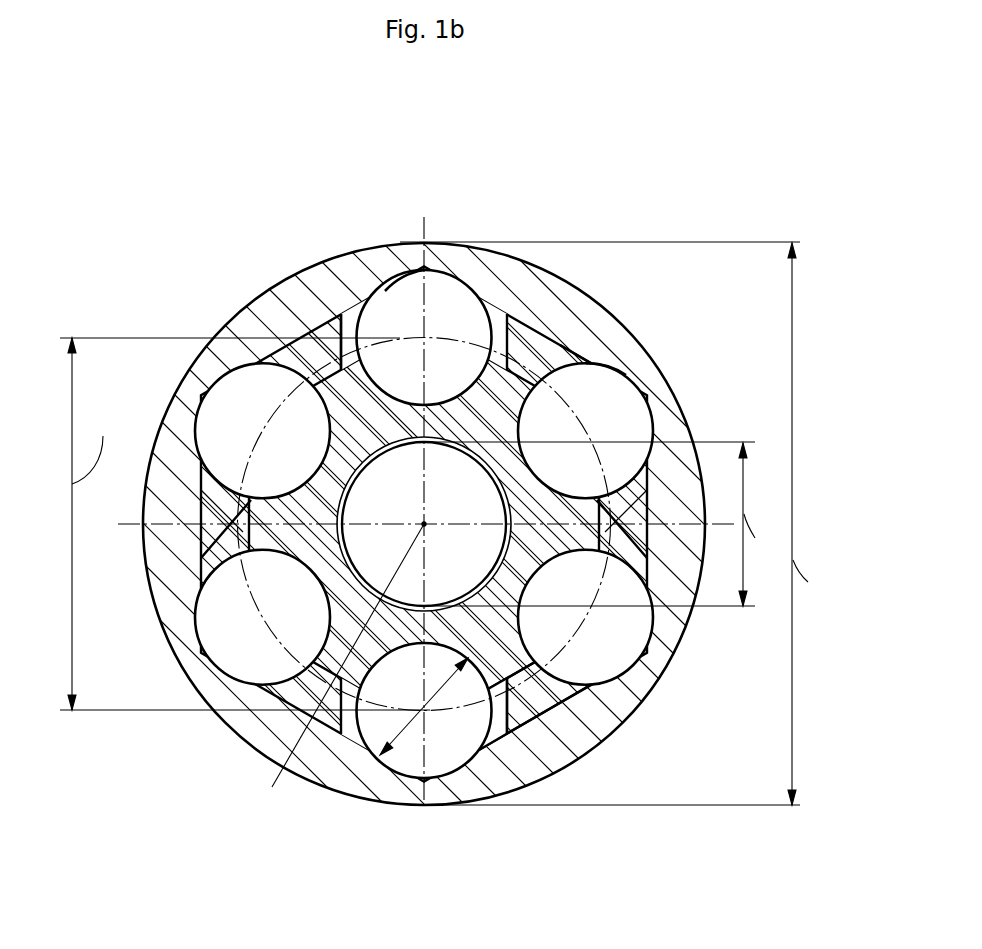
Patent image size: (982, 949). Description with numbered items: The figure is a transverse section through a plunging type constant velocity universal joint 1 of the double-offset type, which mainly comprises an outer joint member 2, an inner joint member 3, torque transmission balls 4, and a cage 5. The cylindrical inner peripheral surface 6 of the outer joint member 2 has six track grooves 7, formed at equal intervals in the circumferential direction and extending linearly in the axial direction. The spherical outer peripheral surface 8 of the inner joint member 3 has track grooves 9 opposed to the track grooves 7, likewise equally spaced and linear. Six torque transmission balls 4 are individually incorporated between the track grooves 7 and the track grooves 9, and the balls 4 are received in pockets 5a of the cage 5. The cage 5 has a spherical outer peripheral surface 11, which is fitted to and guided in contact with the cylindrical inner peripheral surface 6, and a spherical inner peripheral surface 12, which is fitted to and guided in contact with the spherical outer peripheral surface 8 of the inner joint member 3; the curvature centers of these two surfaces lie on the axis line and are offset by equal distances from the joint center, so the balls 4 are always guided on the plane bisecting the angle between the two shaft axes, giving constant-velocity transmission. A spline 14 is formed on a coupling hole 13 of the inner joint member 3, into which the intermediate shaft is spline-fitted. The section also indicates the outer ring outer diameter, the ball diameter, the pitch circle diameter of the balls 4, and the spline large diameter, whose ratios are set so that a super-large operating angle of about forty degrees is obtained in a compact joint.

The plunging type constant velocity universal joint 1 is at (460, 457).
The outer joint member 2 is at (398, 242).
The inner joint member 3 is at (507, 653).
The torque transmission balls 4 is at (615, 423).
The cage 5 is at (552, 290).
The pockets 5a is at (582, 354).
The cylindrical inner peripheral surface 6 is at (345, 316).
The track grooves 7 is at (385, 291).
The spherical outer peripheral surface 8 is at (512, 682).
The track grooves 9 is at (626, 375).
The spherical outer peripheral surface 11 is at (527, 722).
The spherical inner peripheral surface 12 is at (335, 642).
The coupling hole 13 is at (449, 600).
The spline 14 is at (424, 524).